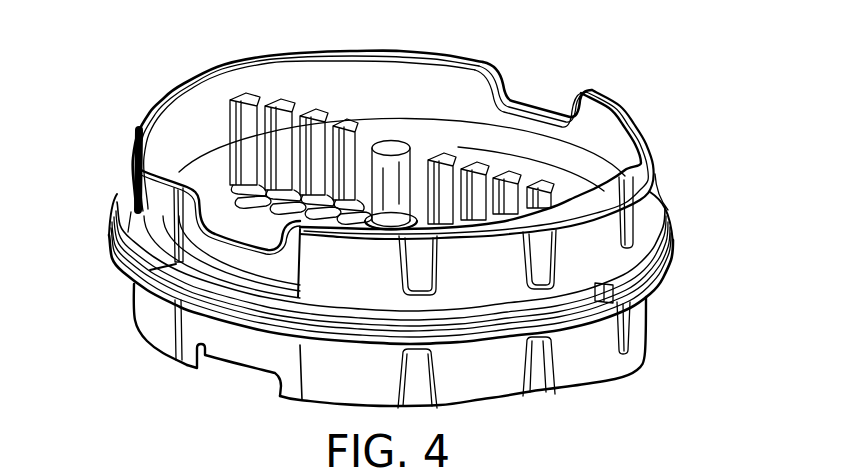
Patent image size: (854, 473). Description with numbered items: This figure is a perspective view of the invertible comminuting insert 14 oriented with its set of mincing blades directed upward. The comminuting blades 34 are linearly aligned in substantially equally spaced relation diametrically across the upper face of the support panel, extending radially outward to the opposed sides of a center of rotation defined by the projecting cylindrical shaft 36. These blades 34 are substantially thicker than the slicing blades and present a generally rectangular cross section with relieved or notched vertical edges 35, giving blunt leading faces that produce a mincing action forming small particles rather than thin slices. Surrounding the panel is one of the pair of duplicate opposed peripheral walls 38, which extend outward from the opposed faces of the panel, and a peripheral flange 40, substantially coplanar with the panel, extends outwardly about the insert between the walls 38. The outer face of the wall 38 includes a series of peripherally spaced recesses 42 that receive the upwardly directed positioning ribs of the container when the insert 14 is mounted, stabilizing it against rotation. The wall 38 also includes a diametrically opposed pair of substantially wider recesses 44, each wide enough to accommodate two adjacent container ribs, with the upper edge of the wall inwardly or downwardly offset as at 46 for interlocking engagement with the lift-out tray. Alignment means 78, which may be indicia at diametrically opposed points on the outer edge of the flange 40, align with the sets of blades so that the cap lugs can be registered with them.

The comminuting insert 14 is at (663, 139).
The comminuting blades 34 is at (277, 101).
The relieved vertical edges 35 is at (229, 124).
The cylindrical shaft 36 is at (396, 146).
The peripheral walls 38 is at (161, 316).
The peripheral flange 40 is at (660, 219).
The recesses 42 is at (412, 284).
The wider recesses 44 is at (204, 249).
The offset upper edge 46 is at (534, 100).
The alignment means 78 is at (613, 293).